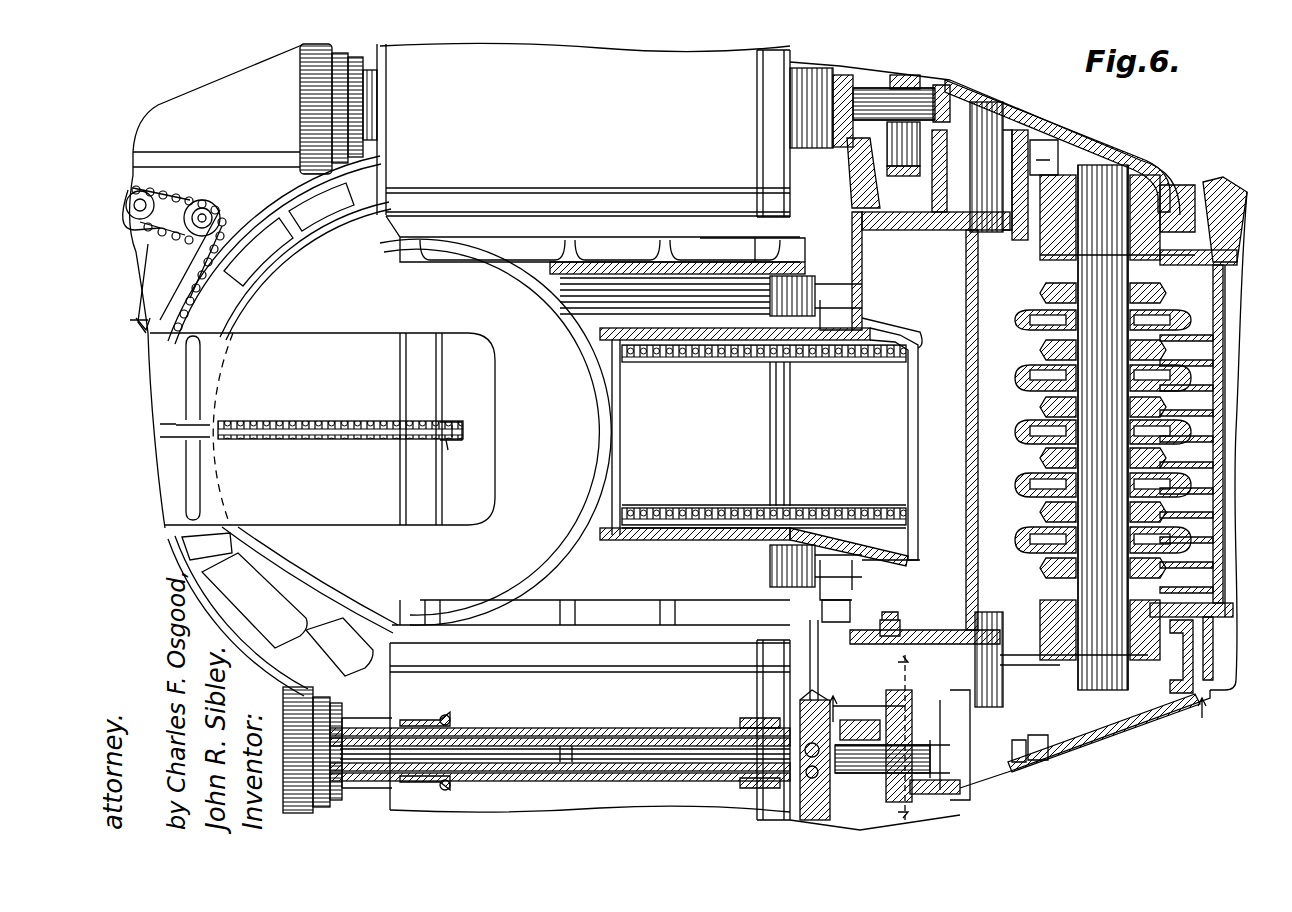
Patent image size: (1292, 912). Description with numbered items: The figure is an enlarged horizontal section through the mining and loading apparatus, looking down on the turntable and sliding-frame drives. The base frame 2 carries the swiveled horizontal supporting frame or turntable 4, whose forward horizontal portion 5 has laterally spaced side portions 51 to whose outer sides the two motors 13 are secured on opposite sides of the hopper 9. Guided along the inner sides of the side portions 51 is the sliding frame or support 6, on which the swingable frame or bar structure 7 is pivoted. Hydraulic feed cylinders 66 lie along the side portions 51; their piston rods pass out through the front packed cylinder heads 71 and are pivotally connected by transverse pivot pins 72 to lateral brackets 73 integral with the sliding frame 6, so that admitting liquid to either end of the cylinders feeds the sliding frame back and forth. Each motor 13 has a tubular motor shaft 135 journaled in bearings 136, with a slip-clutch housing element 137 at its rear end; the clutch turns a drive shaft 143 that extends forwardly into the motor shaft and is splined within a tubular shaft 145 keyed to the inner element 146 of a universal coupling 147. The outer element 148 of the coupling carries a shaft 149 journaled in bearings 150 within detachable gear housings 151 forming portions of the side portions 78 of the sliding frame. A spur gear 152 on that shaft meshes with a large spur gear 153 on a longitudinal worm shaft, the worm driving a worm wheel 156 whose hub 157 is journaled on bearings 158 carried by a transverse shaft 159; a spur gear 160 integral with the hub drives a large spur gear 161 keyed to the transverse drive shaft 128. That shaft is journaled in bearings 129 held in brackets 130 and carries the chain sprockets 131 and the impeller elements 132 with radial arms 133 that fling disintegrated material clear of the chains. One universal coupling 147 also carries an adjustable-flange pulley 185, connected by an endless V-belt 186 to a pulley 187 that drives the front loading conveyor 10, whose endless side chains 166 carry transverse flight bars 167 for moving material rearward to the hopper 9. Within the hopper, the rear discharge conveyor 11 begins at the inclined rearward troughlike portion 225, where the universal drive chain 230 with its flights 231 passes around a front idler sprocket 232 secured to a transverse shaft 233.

The frame 2 is at (195, 178).
The horizontal supporting frame or turntable 4 is at (262, 215).
The horizontal portion 5 is at (790, 220).
The sliding frame or support 6 is at (680, 265).
The swingable frame or bar structure 7 is at (1222, 178).
The hopper 9 is at (605, 430).
The front loading conveyor 10 is at (912, 346).
The rear discharge conveyor 11 is at (452, 420).
The motors 13 is at (614, 62).
The side portions 51 is at (795, 258).
The hydraulic feed cylinders 66 is at (735, 343).
The front packed cylinder heads 71 is at (795, 348).
The transverse pivot pins 72 is at (808, 272).
The lateral brackets 73 is at (864, 282).
The side portions 78 is at (914, 640).
The transverse drive shaft 128 is at (1165, 598).
The bearings 129 is at (1140, 205).
The brackets 130 is at (1185, 212).
The chain sprockets 131 is at (1046, 402).
The impeller elements 132 is at (1022, 480).
The radial arms 133 is at (1036, 535).
The tubular motor shaft 135 is at (478, 722).
The bearings 136 is at (435, 718).
The housing element 137 is at (372, 86).
The drive shaft 143 is at (633, 756).
The tubular shaft 145 is at (505, 745).
The inner element 146 is at (828, 785).
The universal coupling 147 is at (792, 80).
The outer element 148 is at (822, 800).
The shaft 149 is at (870, 102).
The bearings 150 is at (852, 78).
The gear housings 151 is at (1086, 128).
The spur gear 152 is at (912, 78).
The large spur gear 153 is at (878, 173).
The worm wheel 156 is at (1048, 148).
The hub 157 is at (1026, 766).
The bearings 158 is at (1022, 130).
The transverse shaft 159 is at (992, 260).
The spur gear 160 is at (930, 195).
The large spur gear 161 is at (1150, 170).
The endless side chains 166 is at (866, 506).
The transverse flight bars 167 is at (790, 437).
The adjustable-flange pulley 185 is at (826, 675).
The endless V-belt 186 is at (812, 695).
The pulley 187 is at (826, 614).
The inclined rearward troughlike portion 225 is at (129, 328).
The universal drive chain 230 is at (292, 420).
The flights 231 is at (200, 375).
The front idler sprocket 232 is at (463, 453).
The transverse shaft 233 is at (425, 380).